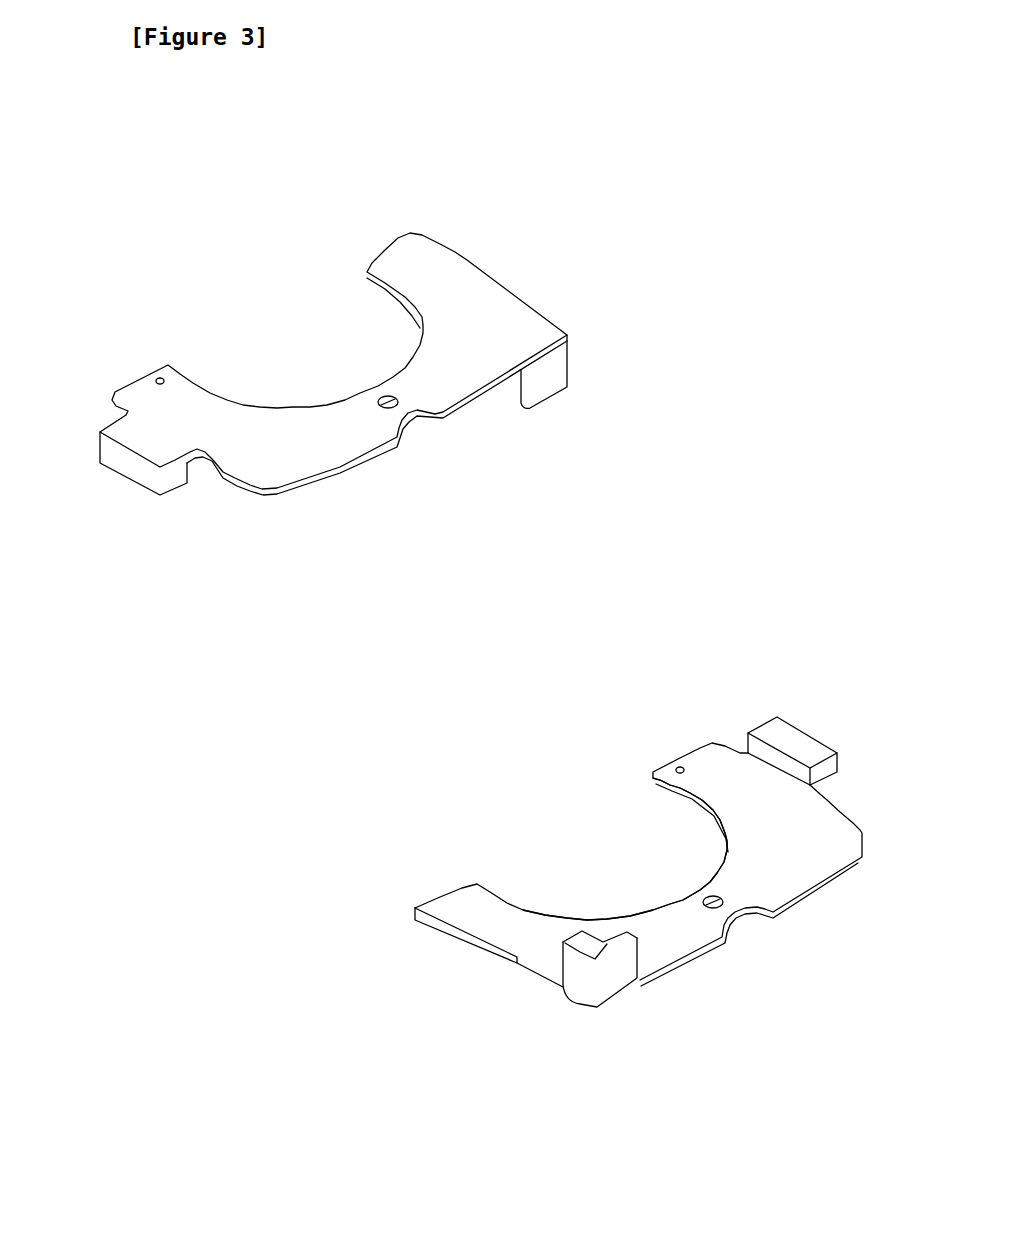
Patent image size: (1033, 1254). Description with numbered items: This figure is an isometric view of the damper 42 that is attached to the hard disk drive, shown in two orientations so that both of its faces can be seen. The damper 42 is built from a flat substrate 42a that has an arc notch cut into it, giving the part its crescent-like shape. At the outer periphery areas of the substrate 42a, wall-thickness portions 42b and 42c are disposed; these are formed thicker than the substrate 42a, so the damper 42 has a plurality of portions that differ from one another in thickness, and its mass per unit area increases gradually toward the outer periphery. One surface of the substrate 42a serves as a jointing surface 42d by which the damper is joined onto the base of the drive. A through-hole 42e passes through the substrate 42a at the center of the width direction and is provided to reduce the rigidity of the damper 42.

The damper 42 is at (505, 787).
The flat substrate 42a is at (467, 263).
The wall-thickness portion 42b is at (150, 477).
The wall-thickness portion 42c is at (548, 377).
The jointing surface 42d is at (753, 832).
The through-hole 42e is at (410, 397).